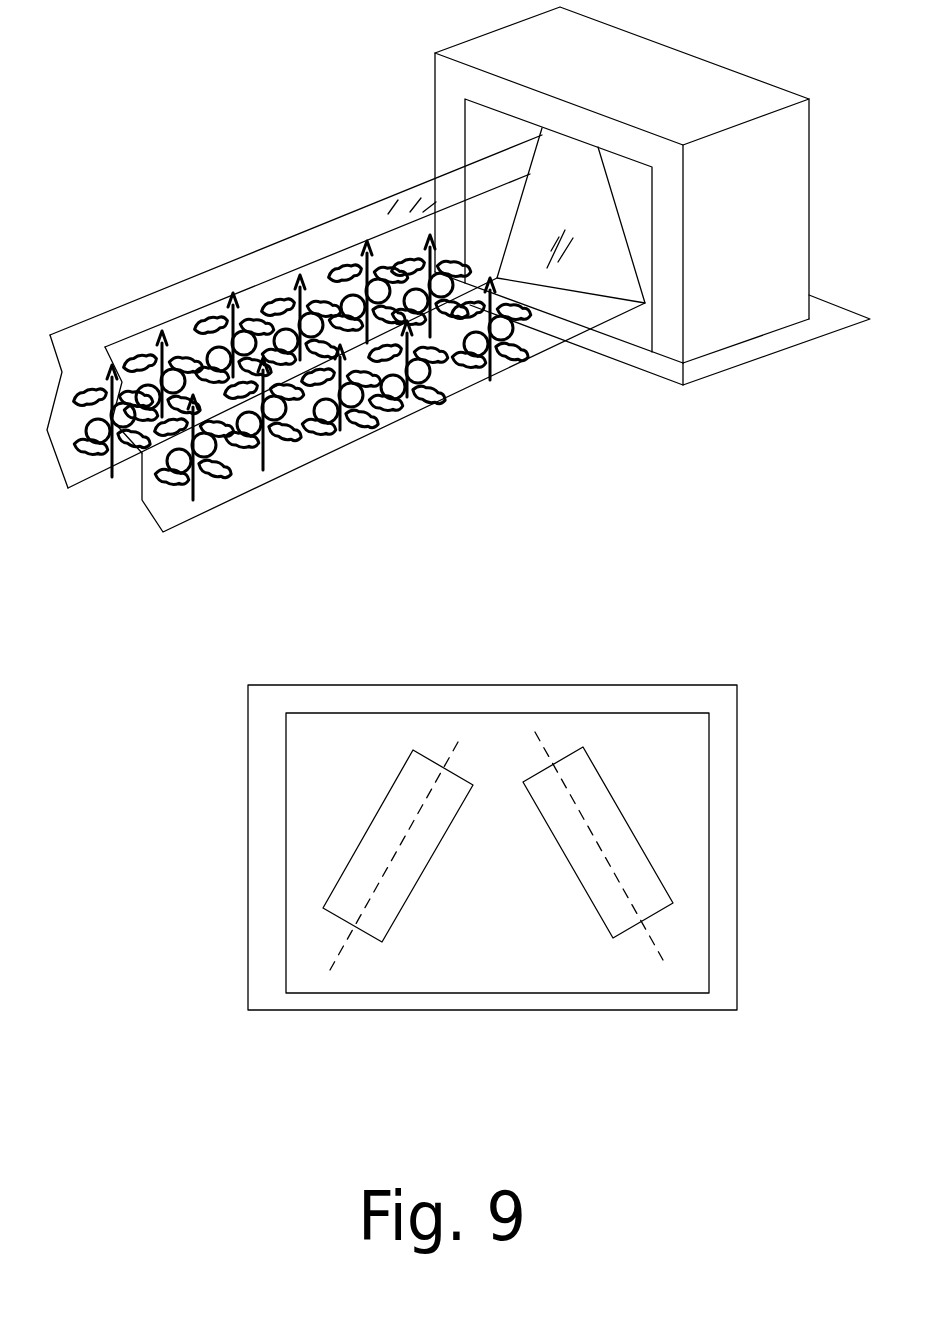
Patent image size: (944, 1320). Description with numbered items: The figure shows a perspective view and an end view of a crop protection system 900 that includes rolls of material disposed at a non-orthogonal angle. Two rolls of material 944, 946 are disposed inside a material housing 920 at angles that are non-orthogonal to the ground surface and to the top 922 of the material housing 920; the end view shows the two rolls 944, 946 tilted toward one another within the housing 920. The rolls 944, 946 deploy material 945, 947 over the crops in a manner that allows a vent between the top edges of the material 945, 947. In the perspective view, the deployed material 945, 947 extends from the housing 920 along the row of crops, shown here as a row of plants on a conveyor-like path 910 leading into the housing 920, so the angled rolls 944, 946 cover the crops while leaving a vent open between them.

The crop protection system 900 is at (394, 19).
The conveyor 910 is at (189, 250).
The material housing 920 is at (433, 100).
The top of the material housing 922 is at (636, 83).
The roll of material 944 is at (403, 897).
The material 945 is at (313, 227).
The roll of material 946 is at (600, 897).
The material 947 is at (530, 338).